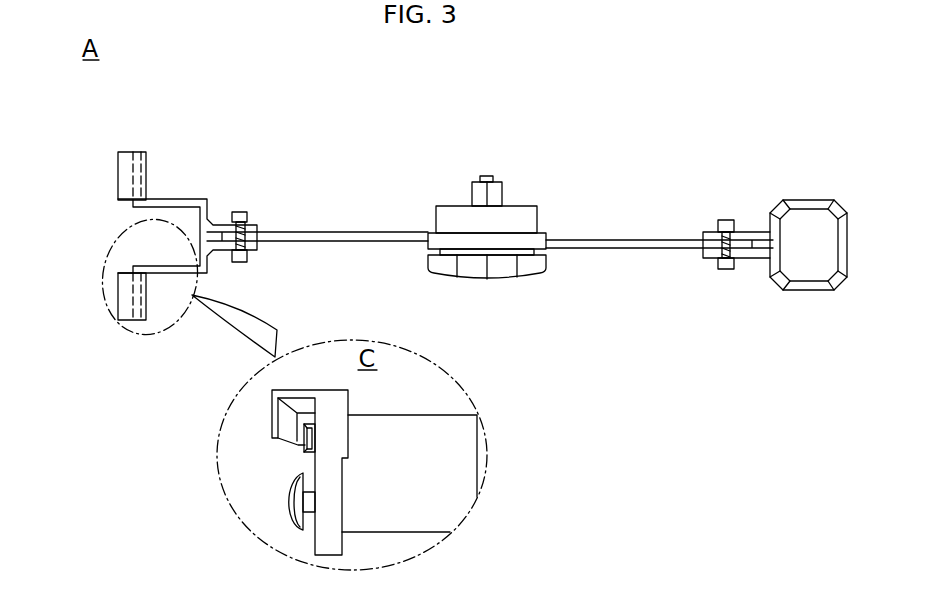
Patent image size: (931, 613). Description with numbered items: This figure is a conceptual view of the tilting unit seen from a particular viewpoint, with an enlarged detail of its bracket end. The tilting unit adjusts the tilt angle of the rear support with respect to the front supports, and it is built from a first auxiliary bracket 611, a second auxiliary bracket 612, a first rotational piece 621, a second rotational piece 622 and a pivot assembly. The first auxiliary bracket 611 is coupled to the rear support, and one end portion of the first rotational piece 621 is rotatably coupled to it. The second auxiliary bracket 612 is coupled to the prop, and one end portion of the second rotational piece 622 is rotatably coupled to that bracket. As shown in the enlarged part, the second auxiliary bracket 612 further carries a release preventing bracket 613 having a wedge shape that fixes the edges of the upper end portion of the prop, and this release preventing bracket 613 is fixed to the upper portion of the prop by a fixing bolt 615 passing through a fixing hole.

The first auxiliary bracket 611 is at (752, 258).
The second auxiliary bracket 612 is at (191, 199).
The release preventing bracket 613 is at (120, 188).
The fixing bolt 615 is at (285, 500).
The first rotational piece 621 is at (627, 244).
The second rotational piece 622 is at (355, 234).